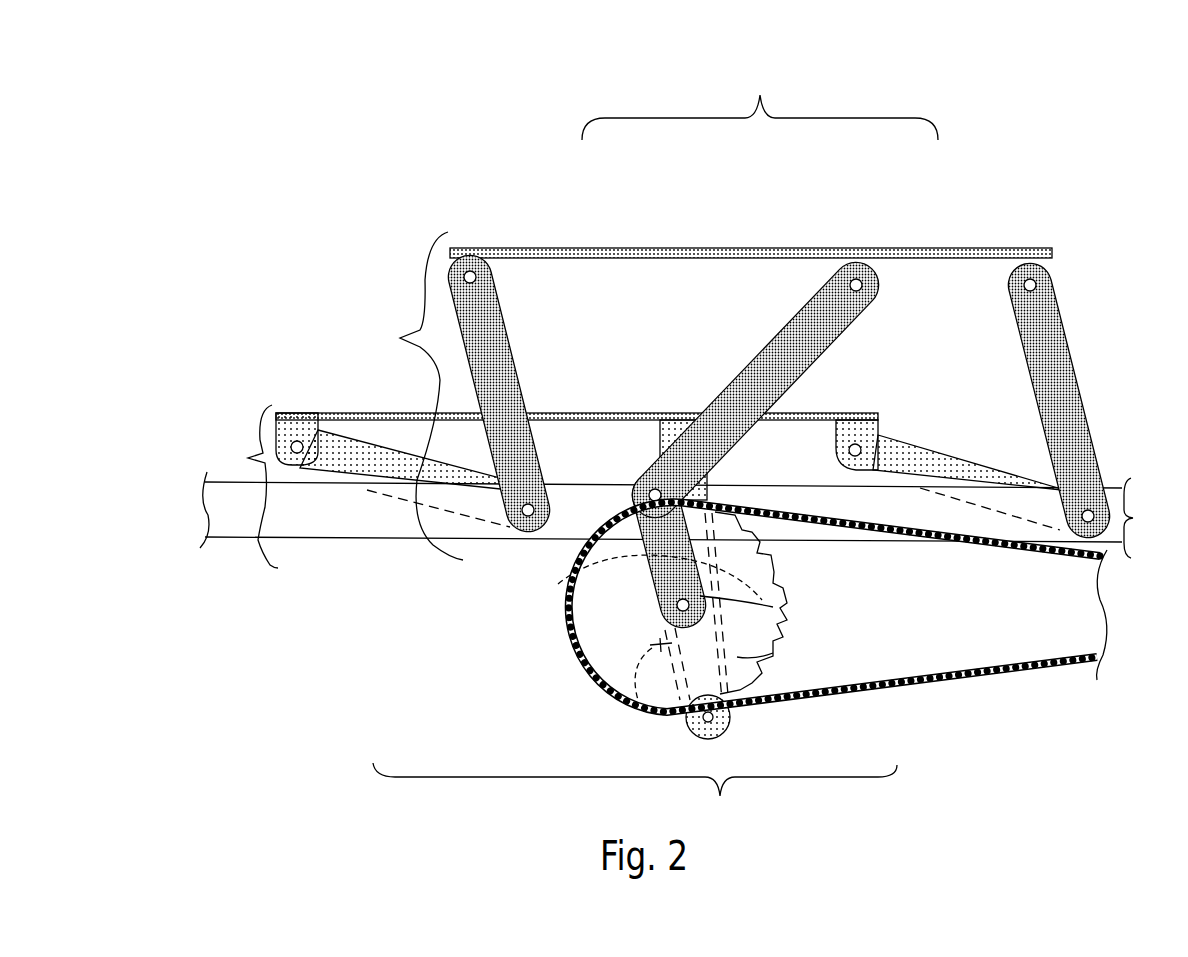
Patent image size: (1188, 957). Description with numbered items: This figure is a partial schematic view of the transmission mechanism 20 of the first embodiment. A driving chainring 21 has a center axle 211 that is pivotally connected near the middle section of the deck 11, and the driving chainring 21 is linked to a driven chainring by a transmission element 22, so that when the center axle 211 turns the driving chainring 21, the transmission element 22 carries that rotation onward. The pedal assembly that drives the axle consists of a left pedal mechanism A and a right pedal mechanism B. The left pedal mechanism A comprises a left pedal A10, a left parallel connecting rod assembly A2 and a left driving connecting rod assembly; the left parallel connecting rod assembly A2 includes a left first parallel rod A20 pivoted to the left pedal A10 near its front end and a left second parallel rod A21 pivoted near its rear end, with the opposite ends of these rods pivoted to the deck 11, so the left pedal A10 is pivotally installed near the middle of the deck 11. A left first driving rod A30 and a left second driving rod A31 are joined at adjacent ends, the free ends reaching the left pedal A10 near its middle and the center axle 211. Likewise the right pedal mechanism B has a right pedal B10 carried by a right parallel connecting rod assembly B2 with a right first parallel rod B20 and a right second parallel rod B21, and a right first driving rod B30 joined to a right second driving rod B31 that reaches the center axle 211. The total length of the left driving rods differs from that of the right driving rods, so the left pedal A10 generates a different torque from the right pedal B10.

The transmission mechanism 20 is at (513, 186).
The left parallel connecting rod assembly A2 is at (760, 99).
The left first parallel rod A20 is at (512, 357).
The left second parallel rod A21 is at (1027, 368).
The left pedal A10 is at (673, 250).
The left first driving rod A30 is at (767, 352).
The left second driving rod A31 is at (573, 578).
The left pedal mechanism A is at (421, 396).
The right pedal mechanism B is at (254, 486).
The right pedal B10 is at (297, 413).
The right first parallel rod B20 is at (335, 482).
The right second parallel rod B21 is at (925, 540).
The right first driving rod B30 is at (787, 573).
The right second driving rod B31 is at (635, 697).
The right parallel connecting rod assembly B2 is at (635, 800).
The deck 11 is at (222, 530).
The driving chainring 21 is at (792, 652).
The center axle 211 is at (773, 607).
The transmission element 22 is at (922, 687).